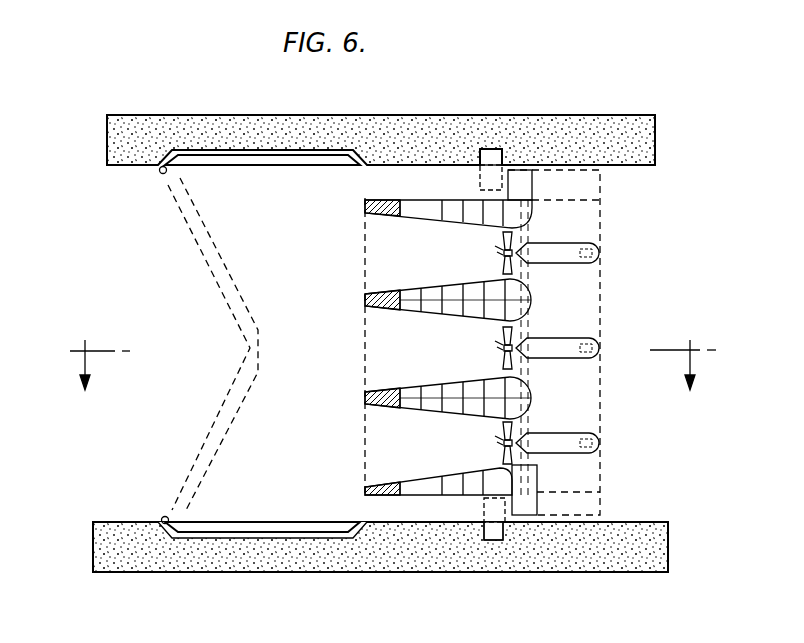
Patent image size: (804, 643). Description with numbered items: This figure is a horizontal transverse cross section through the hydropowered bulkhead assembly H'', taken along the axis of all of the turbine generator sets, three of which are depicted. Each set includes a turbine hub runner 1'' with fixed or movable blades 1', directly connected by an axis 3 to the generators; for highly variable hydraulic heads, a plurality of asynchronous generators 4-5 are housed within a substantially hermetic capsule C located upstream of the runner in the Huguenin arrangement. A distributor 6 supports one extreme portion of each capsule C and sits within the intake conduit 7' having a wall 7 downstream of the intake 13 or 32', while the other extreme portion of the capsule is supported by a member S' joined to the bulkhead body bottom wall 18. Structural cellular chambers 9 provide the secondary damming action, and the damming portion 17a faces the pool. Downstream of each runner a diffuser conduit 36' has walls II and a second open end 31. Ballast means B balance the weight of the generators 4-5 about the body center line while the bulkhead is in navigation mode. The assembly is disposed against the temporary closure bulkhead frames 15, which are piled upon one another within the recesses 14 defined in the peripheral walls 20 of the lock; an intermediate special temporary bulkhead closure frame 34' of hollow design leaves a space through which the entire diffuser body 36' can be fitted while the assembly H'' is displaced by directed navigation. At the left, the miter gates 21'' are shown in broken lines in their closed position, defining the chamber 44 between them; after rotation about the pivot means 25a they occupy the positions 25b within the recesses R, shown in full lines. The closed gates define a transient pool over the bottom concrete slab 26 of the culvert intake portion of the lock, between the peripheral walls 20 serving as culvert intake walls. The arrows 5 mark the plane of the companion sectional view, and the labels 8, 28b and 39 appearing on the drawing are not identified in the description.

The recess R is at (294, 152).
The peripheral wall 20 is at (403, 150).
The recess 14 is at (499, 147).
The pivot means 25a is at (161, 176).
The gate position 25b is at (246, 163).
The ballast means B is at (377, 200).
The intermediate special temporary bulkhead closure frame 34' is at (446, 344).
The temporary closure bulkhead frame 15 is at (492, 343).
The nozzle cell 8 is at (442, 478).
The structural cellular chamber 9 is at (495, 351).
The damming portion 17a is at (533, 184).
The intake 32' is at (579, 342).
The hydropowered bulkhead assembly H'' is at (669, 227).
The wall II is at (384, 323).
The diffuser conduit 36' is at (448, 347).
The turbine hub runner 1'' is at (486, 335).
The blade 1' is at (484, 318).
The distributor 6 is at (522, 236).
The wall 7 is at (530, 375).
The intake conduit 7' is at (544, 418).
The axis 3 is at (526, 262).
The intake 13 is at (533, 285).
The hermetic capsule C is at (586, 243).
The asynchronous generators 4-5 is at (557, 348).
The second open end 31 is at (365, 330).
The miter gate 21'' is at (200, 345).
The bottom concrete slab 26 is at (163, 306).
The chamber 28b is at (302, 466).
The chamber 44 is at (40, 421).
The space 39 is at (645, 320).
The member S' is at (620, 438).
The bulkhead body bottom wall 18 is at (580, 515).
The section line 5 is at (387, 365).